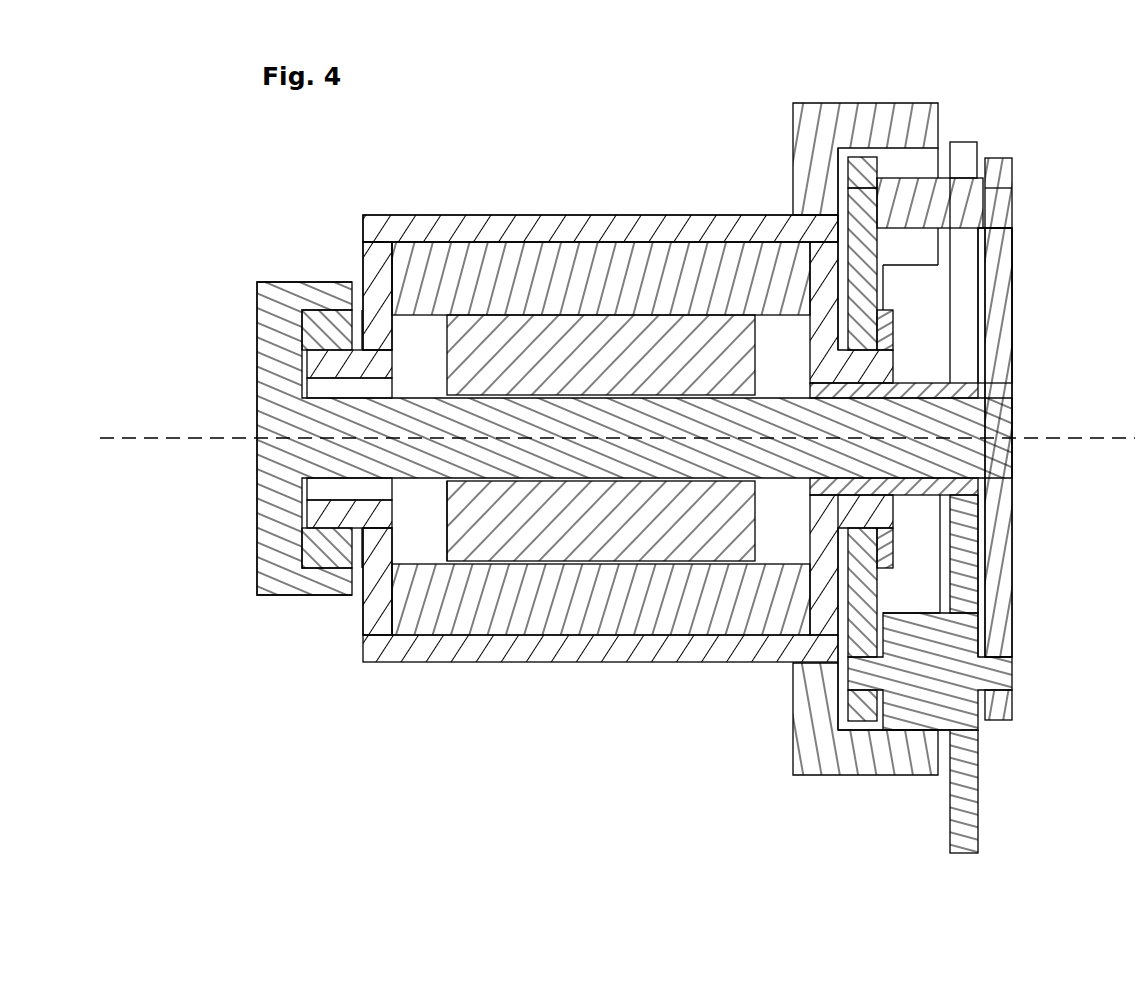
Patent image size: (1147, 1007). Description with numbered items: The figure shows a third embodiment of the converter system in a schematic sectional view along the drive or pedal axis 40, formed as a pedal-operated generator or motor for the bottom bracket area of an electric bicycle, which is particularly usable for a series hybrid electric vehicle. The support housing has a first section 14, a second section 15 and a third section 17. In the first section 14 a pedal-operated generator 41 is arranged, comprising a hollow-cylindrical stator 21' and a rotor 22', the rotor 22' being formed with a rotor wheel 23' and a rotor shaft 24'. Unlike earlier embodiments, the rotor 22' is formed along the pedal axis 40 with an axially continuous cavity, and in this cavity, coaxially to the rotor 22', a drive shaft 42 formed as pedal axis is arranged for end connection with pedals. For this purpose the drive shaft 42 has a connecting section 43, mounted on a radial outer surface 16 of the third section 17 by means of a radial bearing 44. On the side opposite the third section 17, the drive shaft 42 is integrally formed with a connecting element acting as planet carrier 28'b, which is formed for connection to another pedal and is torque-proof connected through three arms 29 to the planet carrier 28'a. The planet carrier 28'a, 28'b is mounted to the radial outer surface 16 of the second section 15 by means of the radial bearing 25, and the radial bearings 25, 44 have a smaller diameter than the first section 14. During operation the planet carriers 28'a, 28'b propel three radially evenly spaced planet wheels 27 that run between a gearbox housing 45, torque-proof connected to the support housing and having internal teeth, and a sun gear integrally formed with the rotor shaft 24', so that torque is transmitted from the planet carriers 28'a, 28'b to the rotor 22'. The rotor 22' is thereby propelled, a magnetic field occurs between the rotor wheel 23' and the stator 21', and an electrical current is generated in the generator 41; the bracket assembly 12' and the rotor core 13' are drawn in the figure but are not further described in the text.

The bearing bracket assembly 12' is at (1050, 442).
The rotor core 13' is at (601, 267).
The first section 14 is at (557, 692).
The second section 15 is at (858, 357).
The radial outer surface 16 is at (356, 345).
The third section 17 is at (368, 363).
The stator 21' is at (601, 421).
The rotor 22' is at (431, 521).
The rotor wheel 23' is at (601, 607).
The rotor shaft 24' is at (961, 422).
The radial bearing 25 is at (883, 328).
The planet wheels 27 is at (963, 157).
The planet carrier 28'a is at (918, 149).
The planet carrier 28'b is at (1042, 440).
The arms 29 is at (990, 207).
The pedal axis 40 is at (1053, 439).
The pedal-operated generator 41 is at (306, 234).
The drive shaft 42 is at (634, 438).
The connecting section 43 is at (287, 597).
The radial bearing 44 is at (318, 333).
The gearbox housing 45 is at (853, 126).